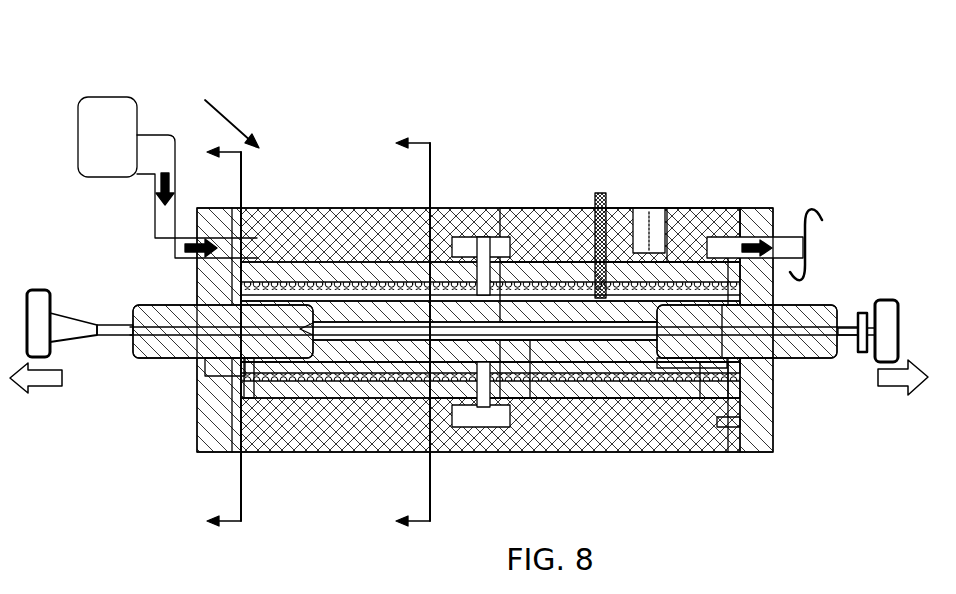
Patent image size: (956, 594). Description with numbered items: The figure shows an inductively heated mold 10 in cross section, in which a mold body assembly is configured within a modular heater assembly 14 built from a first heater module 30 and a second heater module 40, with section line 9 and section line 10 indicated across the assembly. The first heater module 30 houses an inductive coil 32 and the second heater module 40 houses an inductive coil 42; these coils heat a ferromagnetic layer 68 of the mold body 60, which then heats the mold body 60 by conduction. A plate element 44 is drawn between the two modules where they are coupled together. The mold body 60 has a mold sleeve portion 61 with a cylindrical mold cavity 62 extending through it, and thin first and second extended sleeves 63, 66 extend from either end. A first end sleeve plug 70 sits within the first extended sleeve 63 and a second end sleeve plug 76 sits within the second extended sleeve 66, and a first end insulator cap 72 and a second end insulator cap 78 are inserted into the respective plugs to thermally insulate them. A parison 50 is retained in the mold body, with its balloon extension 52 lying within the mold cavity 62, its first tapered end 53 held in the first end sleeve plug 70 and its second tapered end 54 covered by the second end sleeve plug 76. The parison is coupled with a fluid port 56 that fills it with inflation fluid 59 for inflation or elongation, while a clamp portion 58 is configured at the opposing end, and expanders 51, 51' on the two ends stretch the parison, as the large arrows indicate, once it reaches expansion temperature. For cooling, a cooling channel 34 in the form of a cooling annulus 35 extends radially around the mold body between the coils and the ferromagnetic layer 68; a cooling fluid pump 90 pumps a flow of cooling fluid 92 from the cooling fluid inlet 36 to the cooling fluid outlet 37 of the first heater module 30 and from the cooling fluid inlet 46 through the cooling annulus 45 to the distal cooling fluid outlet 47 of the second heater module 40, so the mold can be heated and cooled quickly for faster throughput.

The section line 9- 9 is at (409, 338).
The inductively heated mold 10 is at (219, 321).
The modular heater assembly 14 is at (728, 222).
The first heater module 30 is at (290, 245).
The inductive coil 32 is at (305, 287).
The cooling channel 34 is at (345, 292).
The cooling annulus 35 is at (385, 293).
The cooling fluid inlet 36 is at (248, 230).
The cooling fluid outlet 37 is at (470, 242).
The second heater module 40 is at (528, 230).
The inductive coil 42 is at (542, 288).
The plate 44 is at (606, 230).
The cooling annulus 45 is at (608, 290).
The cooling fluid inlet 46 is at (492, 248).
The cooling fluid outlet 47 is at (710, 245).
The parison 50 is at (390, 340).
The expander 51 is at (37, 313).
The expander 51' is at (901, 318).
The balloon extension 52 is at (472, 345).
The first tapered end 53 is at (298, 345).
The second tapered end 54 is at (650, 350).
The fluid port 56 is at (70, 325).
The clamp portion 58 is at (864, 313).
The inflation fluid 59 is at (112, 325).
The mold body 60 is at (560, 345).
The mold sleeve portion 61 is at (598, 350).
The mold cavity 62 is at (525, 340).
The first extended sleeve 63 is at (205, 405).
The second extended sleeve 66 is at (720, 355).
The ferromagnetic layer 68 is at (345, 340).
The first end sleeve plug 70 is at (274, 445).
The first end insulator cap 72 is at (165, 372).
The second end sleeve plug 76 is at (693, 340).
The second end insulator cap 78 is at (760, 360).
The cooling fluid pump 90 is at (110, 125).
The cooling fluid 92 is at (160, 203).